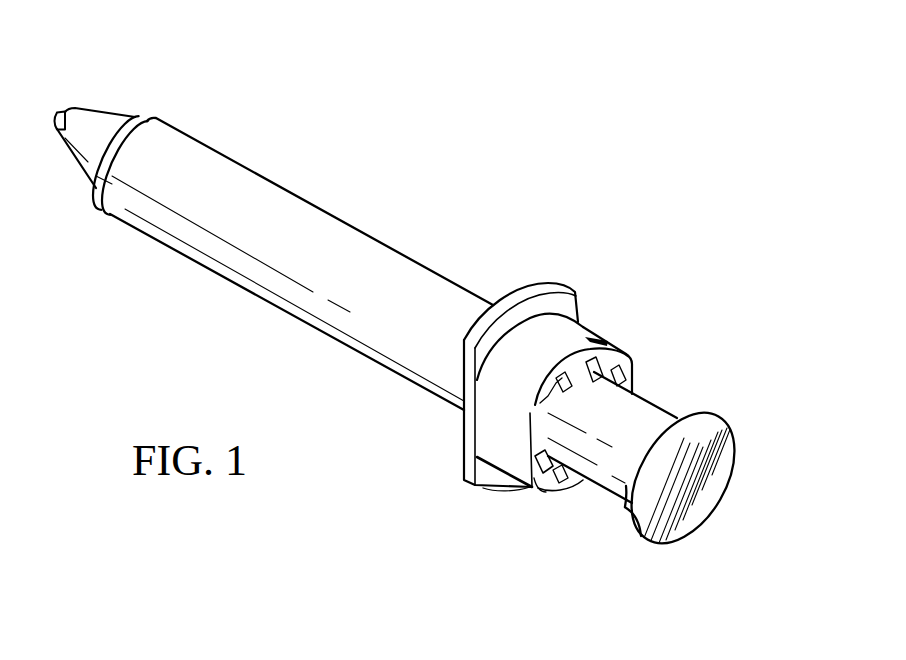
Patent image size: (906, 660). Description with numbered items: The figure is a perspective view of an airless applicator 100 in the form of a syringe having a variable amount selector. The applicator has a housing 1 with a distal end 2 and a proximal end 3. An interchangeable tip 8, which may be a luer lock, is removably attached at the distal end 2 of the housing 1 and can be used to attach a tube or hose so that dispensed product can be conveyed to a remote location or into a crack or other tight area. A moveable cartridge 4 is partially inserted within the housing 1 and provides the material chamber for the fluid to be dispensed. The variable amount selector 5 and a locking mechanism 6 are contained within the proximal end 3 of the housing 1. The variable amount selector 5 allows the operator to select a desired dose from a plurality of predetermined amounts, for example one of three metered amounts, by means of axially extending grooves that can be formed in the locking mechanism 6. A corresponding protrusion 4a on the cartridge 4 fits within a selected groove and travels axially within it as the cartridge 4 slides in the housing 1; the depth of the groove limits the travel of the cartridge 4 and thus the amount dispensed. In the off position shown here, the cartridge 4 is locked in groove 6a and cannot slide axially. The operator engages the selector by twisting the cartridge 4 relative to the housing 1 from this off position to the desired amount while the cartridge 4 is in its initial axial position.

The airless applicator 100 is at (385, 183).
The housing 1 is at (302, 198).
The distal end 2 is at (117, 110).
The interchangeable tip 8 is at (58, 110).
The proximal end 3 is at (483, 487).
The variable amount selector 5 is at (585, 327).
The locking mechanism 6 is at (632, 365).
The groove 6a is at (540, 493).
The moveable cartridge 4 is at (603, 493).
The protrusion 4a is at (633, 385).